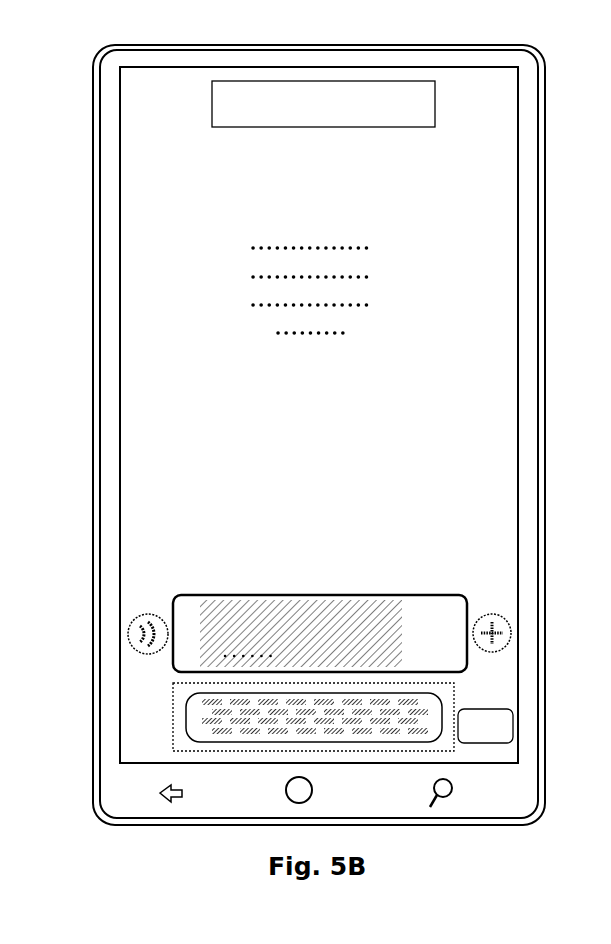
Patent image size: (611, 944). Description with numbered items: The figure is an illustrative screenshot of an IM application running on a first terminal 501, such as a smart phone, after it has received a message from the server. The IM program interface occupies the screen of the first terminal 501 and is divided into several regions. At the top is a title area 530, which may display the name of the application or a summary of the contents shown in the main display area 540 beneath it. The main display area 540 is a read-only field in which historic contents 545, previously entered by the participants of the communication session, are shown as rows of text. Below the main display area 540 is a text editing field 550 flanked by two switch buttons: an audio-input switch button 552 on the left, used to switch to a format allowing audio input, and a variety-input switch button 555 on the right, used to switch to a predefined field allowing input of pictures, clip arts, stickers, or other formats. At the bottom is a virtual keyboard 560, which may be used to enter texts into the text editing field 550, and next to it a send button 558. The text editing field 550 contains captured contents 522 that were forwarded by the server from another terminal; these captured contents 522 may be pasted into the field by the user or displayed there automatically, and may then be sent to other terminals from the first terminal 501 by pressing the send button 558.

The first terminal 501 is at (58, 71).
The title area 530 is at (435, 104).
The main display area 540 is at (135, 248).
The historic contents 545 is at (250, 258).
The text editing field 550 is at (227, 595).
The captured contents 522 is at (200, 633).
The audio-input switch button 552 is at (128, 637).
The variety-input switch button 555 is at (506, 620).
The send button 558 is at (488, 709).
The virtual keyboard 560 is at (173, 717).